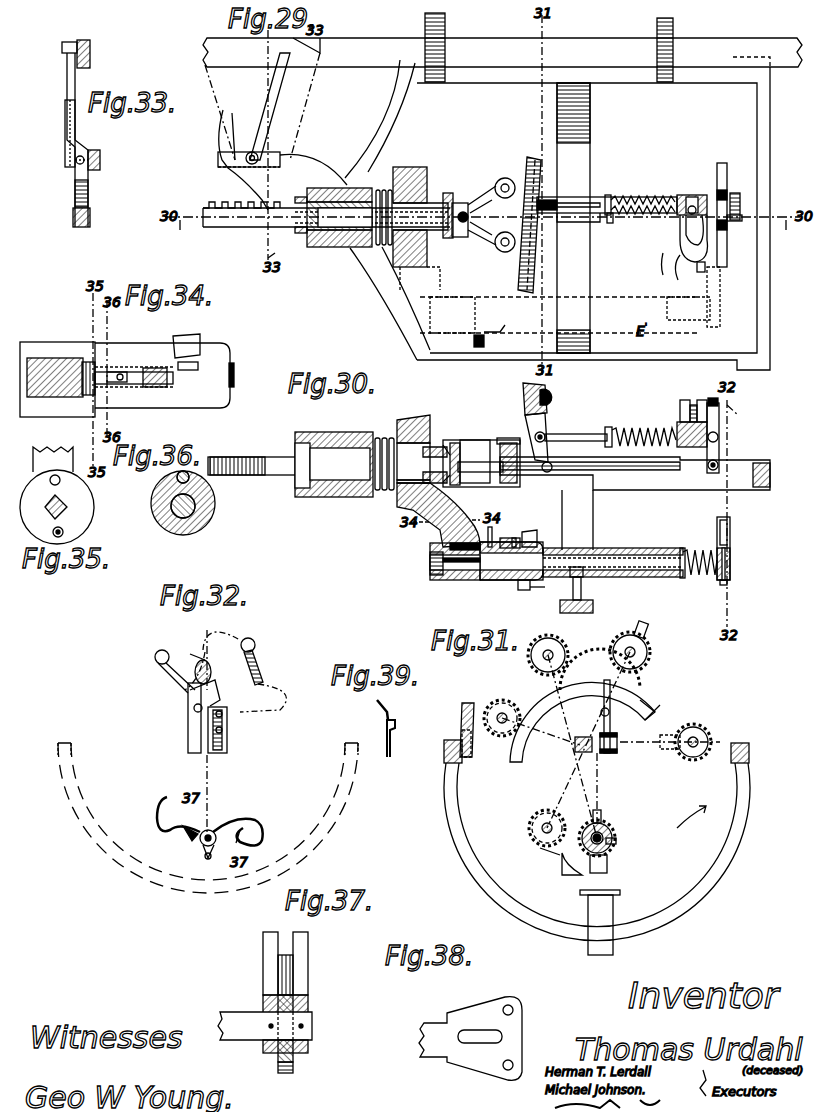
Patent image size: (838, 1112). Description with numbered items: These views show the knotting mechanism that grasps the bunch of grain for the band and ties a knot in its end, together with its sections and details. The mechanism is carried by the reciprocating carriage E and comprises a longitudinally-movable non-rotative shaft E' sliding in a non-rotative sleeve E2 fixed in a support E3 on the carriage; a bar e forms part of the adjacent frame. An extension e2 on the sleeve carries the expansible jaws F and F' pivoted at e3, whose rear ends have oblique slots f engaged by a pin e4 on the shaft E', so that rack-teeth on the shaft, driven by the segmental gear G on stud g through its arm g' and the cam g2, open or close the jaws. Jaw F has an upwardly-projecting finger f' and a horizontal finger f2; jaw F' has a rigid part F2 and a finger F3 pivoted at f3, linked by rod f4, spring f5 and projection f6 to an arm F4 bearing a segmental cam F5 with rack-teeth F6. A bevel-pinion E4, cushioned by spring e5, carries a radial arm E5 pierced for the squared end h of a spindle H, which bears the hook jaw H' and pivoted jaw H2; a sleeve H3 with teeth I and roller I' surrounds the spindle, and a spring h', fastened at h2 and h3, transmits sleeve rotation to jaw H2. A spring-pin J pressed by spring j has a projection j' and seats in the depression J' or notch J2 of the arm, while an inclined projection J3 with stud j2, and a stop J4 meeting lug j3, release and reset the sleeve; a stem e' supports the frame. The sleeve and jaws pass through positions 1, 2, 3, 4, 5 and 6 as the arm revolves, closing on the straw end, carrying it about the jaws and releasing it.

In FIG. 29, the plate e is at (502, 52).
In FIG. 33, the plate e is at (95, 51).
In FIG. 29, the reciprocating carriage E is at (525, 215).
In FIG. 32, the reciprocating carriage E is at (208, 814).
In FIG. 31, the reciprocating carriage E is at (585, 840).
In FIG. 29, the longitudinally-movable non-rotative shaft E' is at (326, 251).
In FIG. 33, the longitudinally-movable non-rotative shaft E' is at (81, 232).
In FIG. 30, the longitudinally-movable non-rotative shaft E' is at (336, 457).
In FIG. 29, the non-rotative sleeve E2 is at (450, 193).
In FIG. 30, the non-rotative sleeve E2 is at (370, 461).
In FIG. 29, the support E3 is at (335, 187).
In FIG. 30, the support E3 is at (330, 497).
In FIG. 29, the bevel-pinion E4 is at (415, 167).
In FIG. 30, the bevel-pinion E4 is at (397, 510).
In FIG. 34, the radial arm E5 is at (50, 417).
In FIG. 30, the radial arm E5 is at (430, 546).
In FIG. 30, the stem e' is at (542, 601).
In FIG. 31, the stem e' is at (600, 922).
In FIG. 29, the extension e2 is at (500, 180).
In FIG. 30, the extension e2 is at (490, 450).
In FIG. 38, the extension e2 is at (470, 1039).
In FIG. 29, the pivotal connections e3 is at (508, 180).
In FIG. 30, the pivotal connections e3 is at (510, 440).
In FIG. 29, the stud or pin e4 is at (462, 224).
In FIG. 30, the stud or pin e4 is at (481, 455).
In FIG. 29, the spiral spring e5 is at (384, 190).
In FIG. 30, the spiral spring e5 is at (384, 438).
In FIG. 29, the segmental gear G is at (225, 185).
In FIG. 33, the segmental gear G is at (88, 193).
In FIG. 29, the stud g is at (243, 160).
In FIG. 33, the stud g is at (104, 160).
In FIG. 29, the laterally-extended arm g' is at (254, 110).
In FIG. 33, the laterally-extended arm g' is at (63, 140).
In FIG. 29, the cam or projection g2 is at (315, 45).
In FIG. 33, the cam or projection g2 is at (62, 45).
In FIG. 29, the jaw F is at (651, 264).
In FIG. 32, the jaw F is at (177, 718).
In FIG. 31, the jaw F is at (576, 731).
In FIG. 29, the jaw F' is at (679, 212).
In FIG. 30, the jaw F' is at (635, 458).
In FIG. 32, the jaw F' is at (234, 730).
In FIG. 31, the jaw F' is at (619, 732).
In FIG. 29, the rigid projection F2 is at (718, 165).
In FIG. 30, the rigid projection F2 is at (695, 420).
In FIG. 29, the pivoted finger F3 is at (694, 272).
In FIG. 30, the pivoted finger F3 is at (712, 398).
In FIG. 32, the pivoted finger F3 is at (209, 683).
In FIG. 29, the arm F4 is at (545, 195).
In FIG. 30, the arm F4 is at (545, 426).
In FIG. 31, the arm F4 is at (612, 705).
In FIG. 29, the segmental cam F5 is at (540, 258).
In FIG. 30, the segmental cam F5 is at (548, 393).
In FIG. 31, the segmental cam F5 is at (645, 690).
In FIG. 29, the rack-teeth F6 is at (557, 222).
In FIG. 30, the rack-teeth F6 is at (526, 394).
In FIG. 31, the rack-teeth F6 is at (600, 663).
In FIG. 29, the slots f is at (479, 221).
In FIG. 30, the slots f is at (462, 456).
In FIG. 29, the upwardly-projecting finger f' is at (674, 264).
In FIG. 32, the upwardly-projecting finger f' is at (190, 645).
In FIG. 29, the horizontally-projecting finger f2 is at (737, 215).
In FIG. 32, the horizontally-projecting finger f2 is at (193, 708).
In FIG. 30, the pivot f3 is at (712, 470).
In FIG. 32, the pivot f3 is at (223, 727).
In FIG. 29, the rod f4 is at (608, 195).
In FIG. 30, the rod f4 is at (590, 434).
In FIG. 31, the rod f4 is at (600, 712).
In FIG. 29, the spring f5 is at (640, 196).
In FIG. 30, the spring f5 is at (640, 428).
In FIG. 29, the projection f6 is at (608, 224).
In FIG. 30, the projection f6 is at (610, 427).
In FIG. 34, the spindle H is at (243, 375).
In FIG. 36, the spindle H is at (207, 506).
In FIG. 30, the spindle H is at (630, 558).
In FIG. 32, the spindle H is at (190, 851).
In FIG. 31, the spindle H is at (594, 827).
In FIG. 37, the spindle H is at (265, 1023).
In FIG. 29, the hook-shaped jaw H' is at (706, 296).
In FIG. 32, the hook-shaped jaw H' is at (175, 824).
In FIG. 37, the hook-shaped jaw H' is at (300, 963).
In FIG. 29, the pivoted jaw H2 is at (735, 193).
In FIG. 32, the pivoted jaw H2 is at (230, 835).
In FIG. 37, the pivoted jaw H2 is at (293, 1068).
In FIG. 34, the sleeve H3 is at (162, 375).
In FIG. 36, the sleeve H3 is at (173, 533).
In FIG. 30, the sleeve H3 is at (620, 577).
In FIG. 31, the sleeve H3 is at (607, 804).
In FIG. 35, the squared end h is at (49, 503).
In FIG. 30, the squared end h is at (439, 581).
In FIG. 30, the spiral spring h' is at (698, 550).
In FIG. 30, the spring attachment h2 is at (682, 578).
In FIG. 30, the spring attachment h3 is at (727, 582).
In FIG. 37, the spring attachment h3 is at (278, 1073).
In FIG. 34, the segmental gear I is at (193, 343).
In FIG. 30, the segmental gear I is at (529, 522).
In FIG. 31, the segmental gear I is at (621, 828).
In FIG. 30, the roller I' is at (525, 594).
In FIG. 31, the roller I' is at (611, 864).
In FIG. 34, the spring pin or catch J is at (134, 355).
In FIG. 36, the spring pin or catch J is at (159, 483).
In FIG. 30, the spring pin or catch J is at (510, 535).
In FIG. 34, the depression J' is at (82, 356).
In FIG. 35, the depression J' is at (78, 490).
In FIG. 30, the depression J' is at (465, 540).
In FIG. 31, the depression J' is at (602, 788).
In FIG. 35, the notch J2 is at (64, 532).
In FIG. 30, the notch J2 is at (461, 578).
In FIG. 30, the inclined projection J3 is at (576, 567).
In FIG. 39, the inclined projection J3 is at (388, 708).
In FIG. 31, the inclined projection J3 is at (463, 703).
In FIG. 30, the stop J4 is at (593, 608).
In FIG. 31, the stop J4 is at (572, 878).
In FIG. 34, the spring j is at (134, 379).
In FIG. 30, the spring j is at (517, 528).
In FIG. 30, the projection j' is at (497, 528).
In FIG. 29, the stud j2 is at (497, 320).
In FIG. 39, the stud j2 is at (393, 728).
In FIG. 31, the stud j2 is at (460, 730).
In FIG. 29, the projecting lug j3 is at (560, 322).
In FIG. 32, the first position 1 is at (212, 830).
In FIG. 31, the first position 1 is at (612, 830).
In FIG. 32, the second position 2 is at (260, 648).
In FIG. 31, the second position 2 is at (650, 656).
In FIG. 32, the third position 3 is at (155, 660).
In FIG. 31, the third position 3 is at (531, 656).
In FIG. 31, the fourth position 4 is at (705, 730).
In FIG. 31, the fifth position 5 is at (502, 740).
In FIG. 31, the sixth position 6 is at (545, 812).